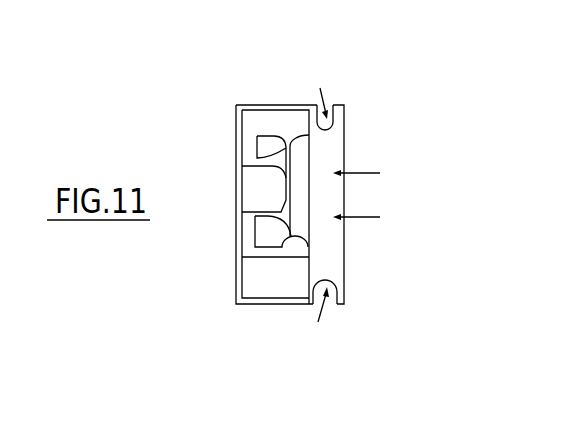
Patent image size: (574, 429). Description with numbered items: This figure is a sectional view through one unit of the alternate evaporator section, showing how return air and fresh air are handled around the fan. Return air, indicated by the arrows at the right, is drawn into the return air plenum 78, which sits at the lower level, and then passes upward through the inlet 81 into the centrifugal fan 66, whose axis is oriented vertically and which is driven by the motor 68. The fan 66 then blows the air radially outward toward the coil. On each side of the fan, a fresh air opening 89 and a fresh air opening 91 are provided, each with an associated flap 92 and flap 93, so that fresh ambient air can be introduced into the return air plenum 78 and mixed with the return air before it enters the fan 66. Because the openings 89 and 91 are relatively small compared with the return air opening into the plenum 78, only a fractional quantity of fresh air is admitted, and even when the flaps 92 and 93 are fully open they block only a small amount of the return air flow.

The centrifugal fan 66 is at (266, 144).
The motor 68 is at (253, 205).
The return air plenum 78 is at (333, 262).
The inlet 81 is at (316, 163).
The fresh air opening 89 is at (338, 88).
The fresh air opening 91 is at (328, 324).
The flap 92 is at (334, 121).
The flap 93 is at (342, 287).